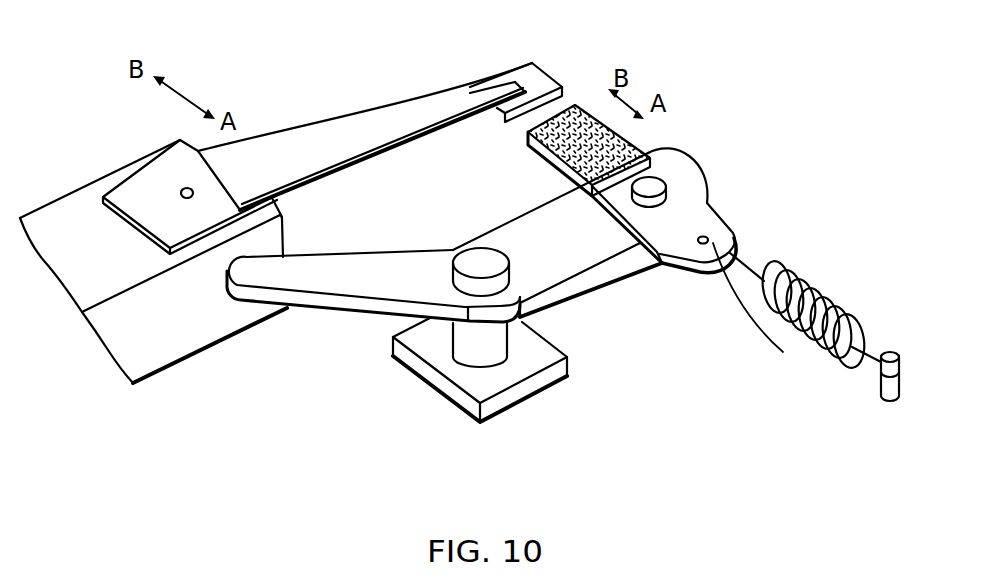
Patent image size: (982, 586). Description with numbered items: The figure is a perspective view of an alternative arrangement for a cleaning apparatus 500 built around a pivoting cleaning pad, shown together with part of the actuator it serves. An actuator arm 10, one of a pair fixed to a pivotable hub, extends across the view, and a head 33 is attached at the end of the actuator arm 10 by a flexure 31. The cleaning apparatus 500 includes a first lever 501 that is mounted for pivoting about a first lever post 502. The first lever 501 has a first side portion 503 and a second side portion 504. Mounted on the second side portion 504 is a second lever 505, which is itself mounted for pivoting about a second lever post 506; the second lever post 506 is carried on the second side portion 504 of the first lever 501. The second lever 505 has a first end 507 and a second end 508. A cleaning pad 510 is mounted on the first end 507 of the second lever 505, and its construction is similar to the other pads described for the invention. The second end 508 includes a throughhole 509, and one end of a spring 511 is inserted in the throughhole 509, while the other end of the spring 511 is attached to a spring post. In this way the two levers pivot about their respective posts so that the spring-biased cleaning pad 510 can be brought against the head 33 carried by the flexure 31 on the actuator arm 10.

The actuator arm 10 is at (192, 342).
The flexure 31 is at (272, 130).
The head 33 is at (537, 80).
The cleaning apparatus 500 is at (565, 400).
The first lever 501 is at (597, 268).
The first lever post 502 is at (477, 273).
The first side portion 503 is at (328, 282).
The second side portion 504 is at (555, 272).
The second lever 505 is at (705, 244).
The second lever post 506 is at (653, 188).
The first end 507 is at (550, 168).
The second end 508 is at (713, 219).
The throughhole 509 is at (764, 318).
The cleaning pad 510 is at (577, 105).
The spring 511 is at (798, 273).